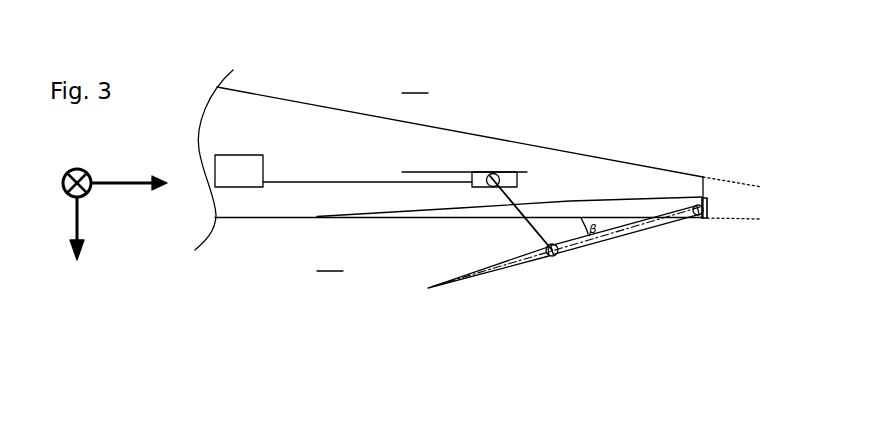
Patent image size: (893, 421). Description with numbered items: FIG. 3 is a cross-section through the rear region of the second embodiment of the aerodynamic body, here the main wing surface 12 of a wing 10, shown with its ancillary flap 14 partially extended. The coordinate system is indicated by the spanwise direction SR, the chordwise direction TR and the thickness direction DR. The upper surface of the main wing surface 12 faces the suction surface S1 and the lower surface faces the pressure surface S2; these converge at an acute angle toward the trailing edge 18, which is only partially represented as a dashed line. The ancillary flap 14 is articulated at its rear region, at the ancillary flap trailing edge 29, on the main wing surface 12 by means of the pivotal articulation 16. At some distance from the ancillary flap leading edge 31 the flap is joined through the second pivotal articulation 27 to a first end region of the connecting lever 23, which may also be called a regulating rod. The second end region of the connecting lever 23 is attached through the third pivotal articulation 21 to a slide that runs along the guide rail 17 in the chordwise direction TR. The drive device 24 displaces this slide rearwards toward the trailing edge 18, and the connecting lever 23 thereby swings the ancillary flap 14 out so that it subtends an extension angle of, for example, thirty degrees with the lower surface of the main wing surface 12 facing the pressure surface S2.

The wing 10 is at (510, 87).
The main wing surface 12 is at (568, 152).
The ancillary flap 14 is at (617, 238).
The pivotal articulation 16 is at (702, 221).
The guide rail 17 is at (432, 172).
The main wing surface trailing edge 18 is at (734, 192).
The third pivotal articulation 21 is at (483, 171).
The connecting lever 23 is at (538, 233).
The drive device 24 is at (245, 155).
The second pivotal articulation 27 is at (548, 258).
The ancillary flap trailing edge 29 is at (708, 205).
The ancillary flap leading edge 31 is at (398, 303).
The suction surface S1 is at (415, 83).
The pressure surface S2 is at (330, 261).
The spanwise direction SR is at (88, 171).
The chordwise direction TR is at (110, 188).
The thickness direction DR is at (75, 220).